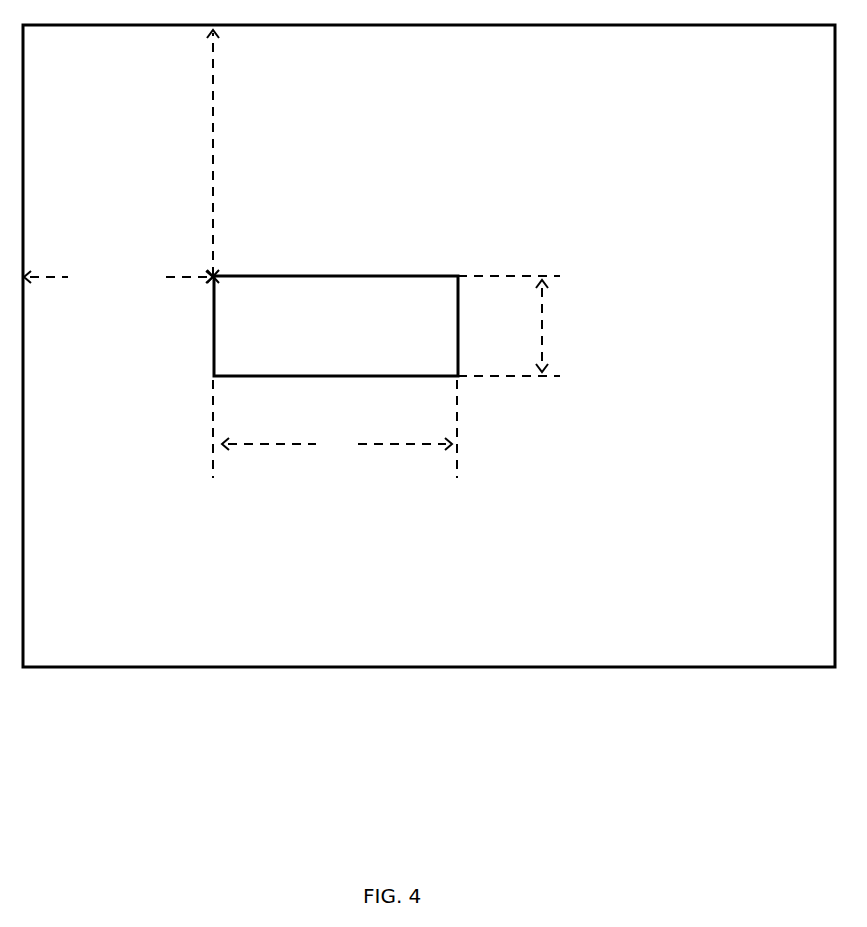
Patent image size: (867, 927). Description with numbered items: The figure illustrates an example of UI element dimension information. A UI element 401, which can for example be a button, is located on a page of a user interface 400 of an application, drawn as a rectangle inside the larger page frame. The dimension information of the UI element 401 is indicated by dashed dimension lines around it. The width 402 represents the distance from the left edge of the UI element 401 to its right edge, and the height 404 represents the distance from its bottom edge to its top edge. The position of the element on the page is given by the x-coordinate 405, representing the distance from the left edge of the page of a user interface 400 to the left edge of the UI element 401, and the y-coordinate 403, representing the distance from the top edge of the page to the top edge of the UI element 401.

The page of a user interface 400 is at (429, 346).
The UI element 401 is at (336, 326).
The width 402 is at (345, 456).
The y-coordinate 403 is at (249, 157).
The height 404 is at (567, 321).
The x-coordinate 405 is at (171, 287).